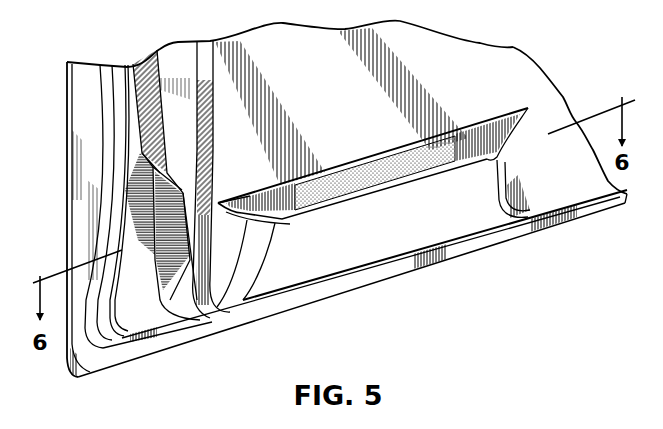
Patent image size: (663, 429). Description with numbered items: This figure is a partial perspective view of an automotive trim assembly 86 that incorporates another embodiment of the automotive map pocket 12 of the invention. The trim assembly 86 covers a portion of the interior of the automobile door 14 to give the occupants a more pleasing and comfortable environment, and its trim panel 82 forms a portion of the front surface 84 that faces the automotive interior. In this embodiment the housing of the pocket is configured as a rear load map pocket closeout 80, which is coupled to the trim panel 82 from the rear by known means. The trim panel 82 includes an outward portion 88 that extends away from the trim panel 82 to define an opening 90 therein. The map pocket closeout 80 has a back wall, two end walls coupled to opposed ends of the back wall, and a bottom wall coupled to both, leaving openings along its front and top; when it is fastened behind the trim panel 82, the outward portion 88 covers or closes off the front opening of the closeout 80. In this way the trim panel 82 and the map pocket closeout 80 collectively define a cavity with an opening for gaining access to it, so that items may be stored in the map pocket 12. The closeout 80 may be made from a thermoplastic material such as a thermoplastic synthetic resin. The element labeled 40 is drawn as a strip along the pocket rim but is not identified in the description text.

The automotive map pocket 12 is at (464, 112).
The automobile door 14 is at (190, 76).
The insert strip 40 is at (349, 178).
The rear load map pocket closeout 80 is at (490, 132).
The trim panel 82 is at (478, 46).
The front surface 84 is at (263, 60).
The trim assembly 86 is at (549, 48).
The outward portion 88 is at (367, 240).
The opening 90 is at (256, 196).